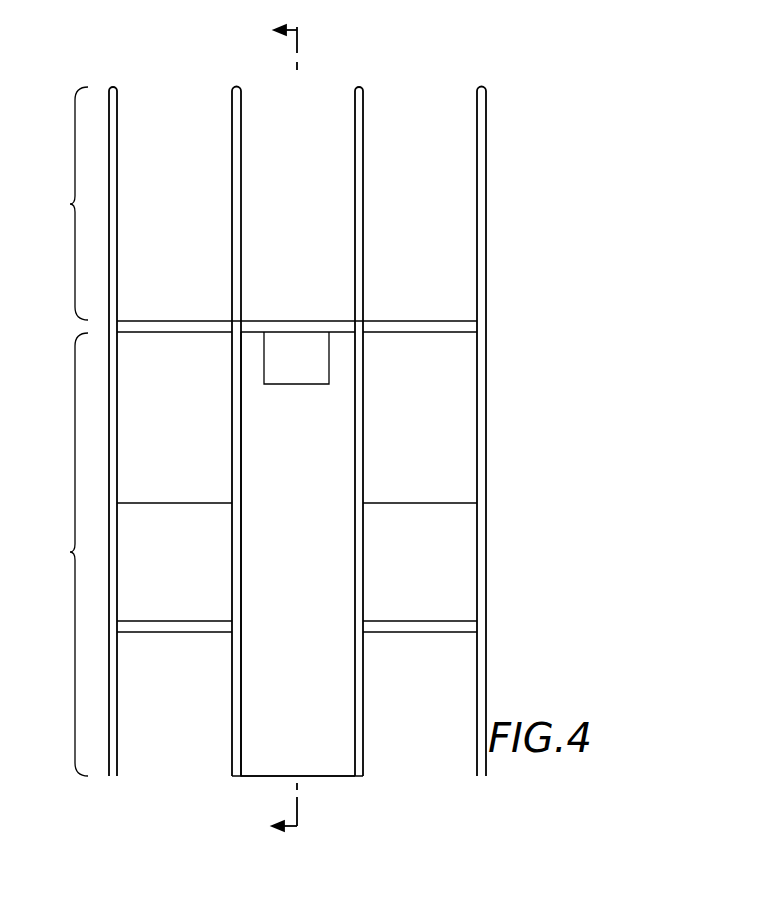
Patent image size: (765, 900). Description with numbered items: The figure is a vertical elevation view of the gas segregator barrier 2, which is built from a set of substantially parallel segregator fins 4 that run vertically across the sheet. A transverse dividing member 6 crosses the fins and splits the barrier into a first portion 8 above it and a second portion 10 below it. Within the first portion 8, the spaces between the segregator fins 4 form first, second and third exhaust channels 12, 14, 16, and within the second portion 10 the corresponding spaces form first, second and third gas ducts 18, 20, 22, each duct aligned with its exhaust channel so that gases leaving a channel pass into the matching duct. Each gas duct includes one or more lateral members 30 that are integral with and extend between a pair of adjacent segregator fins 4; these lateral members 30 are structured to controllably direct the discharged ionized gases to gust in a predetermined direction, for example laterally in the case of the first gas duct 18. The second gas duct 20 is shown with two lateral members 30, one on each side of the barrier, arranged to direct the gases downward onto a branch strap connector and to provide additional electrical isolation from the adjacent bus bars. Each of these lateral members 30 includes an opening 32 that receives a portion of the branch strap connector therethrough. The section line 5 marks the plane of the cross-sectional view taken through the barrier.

The gas segregator barrier 2 is at (287, 421).
The segregator fins 4 is at (118, 95).
The section line 5 is at (299, 430).
The transverse dividing member 6 is at (418, 320).
The first portion 8 is at (68, 203).
The second portion 10 is at (66, 554).
The first exhaust channel 12 is at (172, 116).
The second exhaust channel 14 is at (318, 136).
The third exhaust channel 16 is at (428, 110).
The first gas duct 18 is at (196, 596).
The second gas duct 20 is at (323, 536).
The third gas duct 22 is at (453, 420).
The lateral member 30 is at (305, 726).
The opening 32 is at (297, 368).